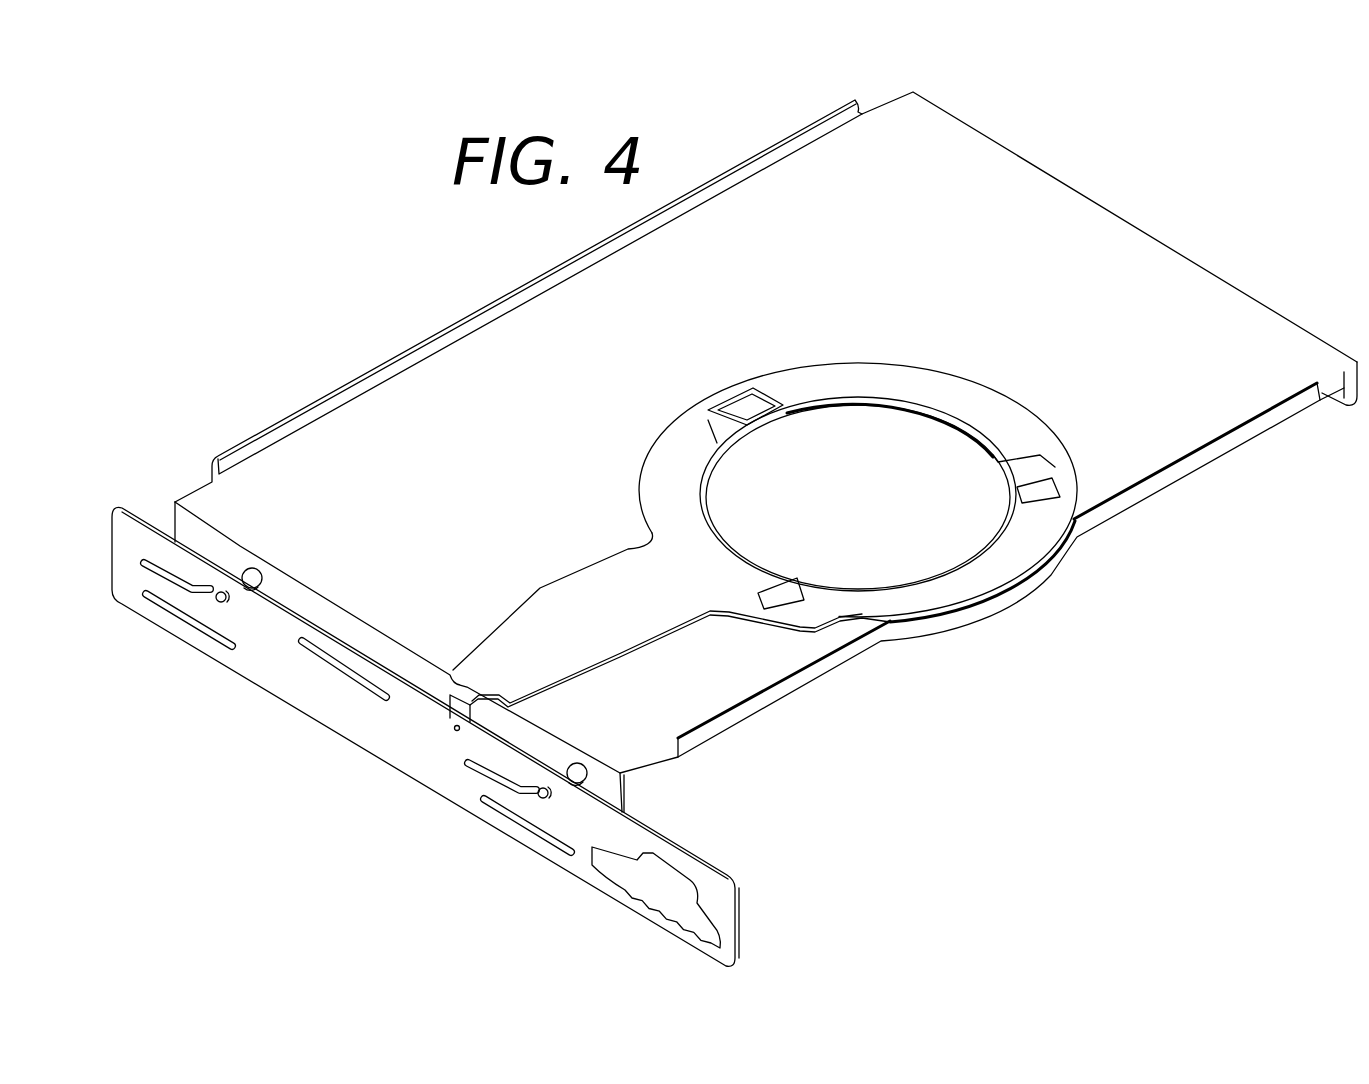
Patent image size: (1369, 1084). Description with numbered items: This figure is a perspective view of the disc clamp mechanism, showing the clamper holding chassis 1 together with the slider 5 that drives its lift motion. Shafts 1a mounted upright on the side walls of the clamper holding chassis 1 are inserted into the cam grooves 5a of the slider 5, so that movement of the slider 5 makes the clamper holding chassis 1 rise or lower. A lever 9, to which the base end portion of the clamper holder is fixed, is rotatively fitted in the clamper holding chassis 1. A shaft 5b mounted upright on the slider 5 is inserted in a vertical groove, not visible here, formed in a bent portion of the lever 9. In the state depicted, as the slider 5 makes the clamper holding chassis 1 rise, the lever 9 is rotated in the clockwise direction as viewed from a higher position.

The clamper holding chassis 1 is at (767, 703).
The shaft 1a is at (217, 600).
The slider 5 is at (343, 717).
The cam groove 5a is at (147, 573).
The shaft 5b is at (455, 729).
The lever 9 is at (600, 577).